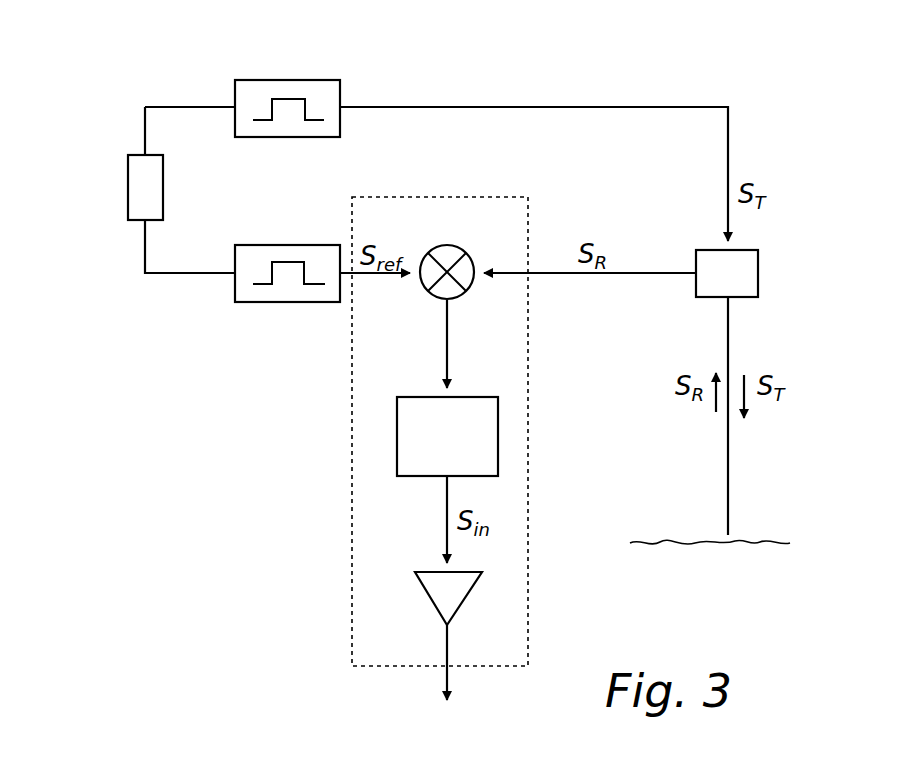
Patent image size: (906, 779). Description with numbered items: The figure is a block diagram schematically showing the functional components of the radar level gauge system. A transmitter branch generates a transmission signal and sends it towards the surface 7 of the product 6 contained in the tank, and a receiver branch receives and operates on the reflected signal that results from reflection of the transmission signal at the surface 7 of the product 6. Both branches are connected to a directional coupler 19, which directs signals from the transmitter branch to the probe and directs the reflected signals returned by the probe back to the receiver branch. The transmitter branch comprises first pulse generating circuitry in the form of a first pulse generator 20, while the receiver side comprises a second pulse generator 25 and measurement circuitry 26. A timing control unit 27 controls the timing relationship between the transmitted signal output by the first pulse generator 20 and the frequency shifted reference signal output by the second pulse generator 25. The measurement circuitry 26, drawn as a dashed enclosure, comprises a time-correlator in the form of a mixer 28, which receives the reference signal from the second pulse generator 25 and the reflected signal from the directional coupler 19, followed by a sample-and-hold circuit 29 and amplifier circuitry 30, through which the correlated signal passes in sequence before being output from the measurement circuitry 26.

The first pulse generator 20 is at (270, 80).
The second pulse generator 25 is at (255, 302).
The timing control unit 27 is at (128, 183).
The mixer 28 is at (465, 252).
The sample-and-hold circuit 29 is at (498, 442).
The measurement circuitry 26 is at (352, 462).
The amplifier circuitry 30 is at (428, 602).
The directional coupler 19 is at (770, 273).
The surface 7 is at (750, 540).
The product 6 is at (716, 584).